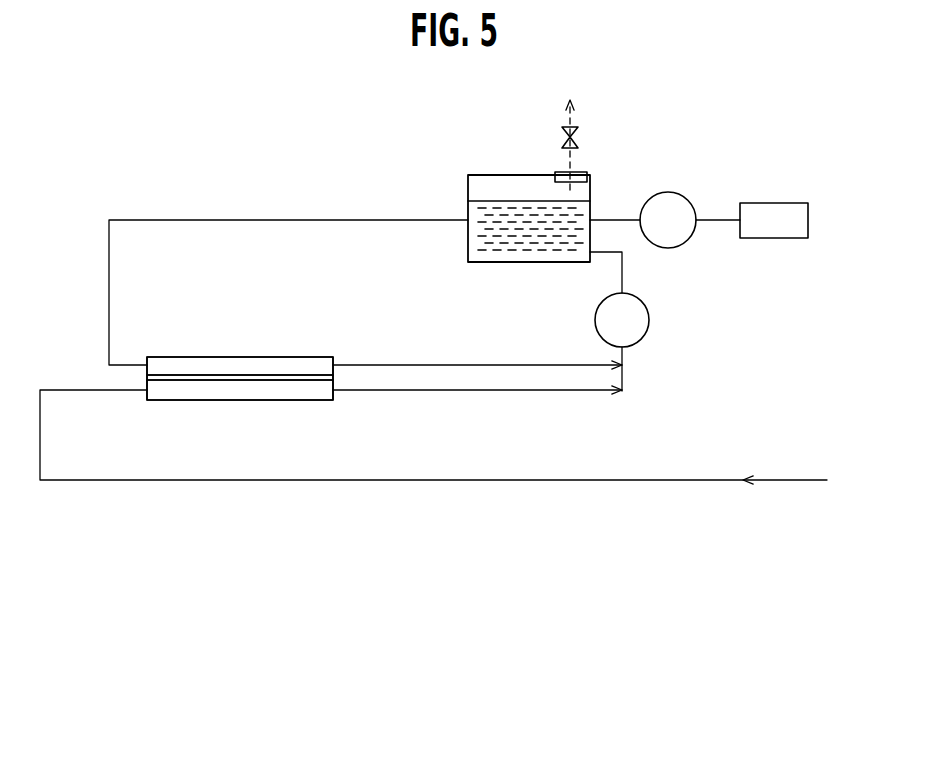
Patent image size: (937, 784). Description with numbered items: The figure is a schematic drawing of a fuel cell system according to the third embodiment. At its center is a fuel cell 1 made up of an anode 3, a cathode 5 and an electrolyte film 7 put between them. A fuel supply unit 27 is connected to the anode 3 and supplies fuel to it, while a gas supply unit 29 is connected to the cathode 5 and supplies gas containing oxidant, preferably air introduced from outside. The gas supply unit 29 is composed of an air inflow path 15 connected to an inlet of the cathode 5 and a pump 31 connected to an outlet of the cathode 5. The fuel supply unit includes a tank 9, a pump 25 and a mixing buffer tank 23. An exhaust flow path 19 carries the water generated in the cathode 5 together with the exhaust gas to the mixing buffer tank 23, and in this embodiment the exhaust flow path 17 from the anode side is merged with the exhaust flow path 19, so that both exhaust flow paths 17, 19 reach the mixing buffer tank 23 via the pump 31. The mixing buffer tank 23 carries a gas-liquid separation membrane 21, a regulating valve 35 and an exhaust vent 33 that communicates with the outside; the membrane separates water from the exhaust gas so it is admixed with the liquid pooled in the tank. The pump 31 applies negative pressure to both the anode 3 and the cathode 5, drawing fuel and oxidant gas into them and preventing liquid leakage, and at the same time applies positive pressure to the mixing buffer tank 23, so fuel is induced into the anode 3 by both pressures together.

The fuel cell 1 is at (333, 345).
The anode 3 is at (228, 357).
The cathode 5 is at (198, 400).
The electrolyte film 7 is at (283, 380).
The tank 9 is at (772, 203).
The air inflow path 15 is at (812, 482).
The exhaust flow path 17 is at (550, 365).
The exhaust flow path 19 is at (572, 390).
The gas-liquid separation membrane 21 is at (589, 171).
The mixing buffer tank 23 is at (482, 263).
The pump 25 is at (668, 192).
The fuel supply unit 27 is at (425, 200).
The gas supply unit 29 is at (650, 400).
The pump 31 is at (649, 320).
The exhaust vent 33 is at (566, 161).
The regulating valve 35 is at (562, 133).